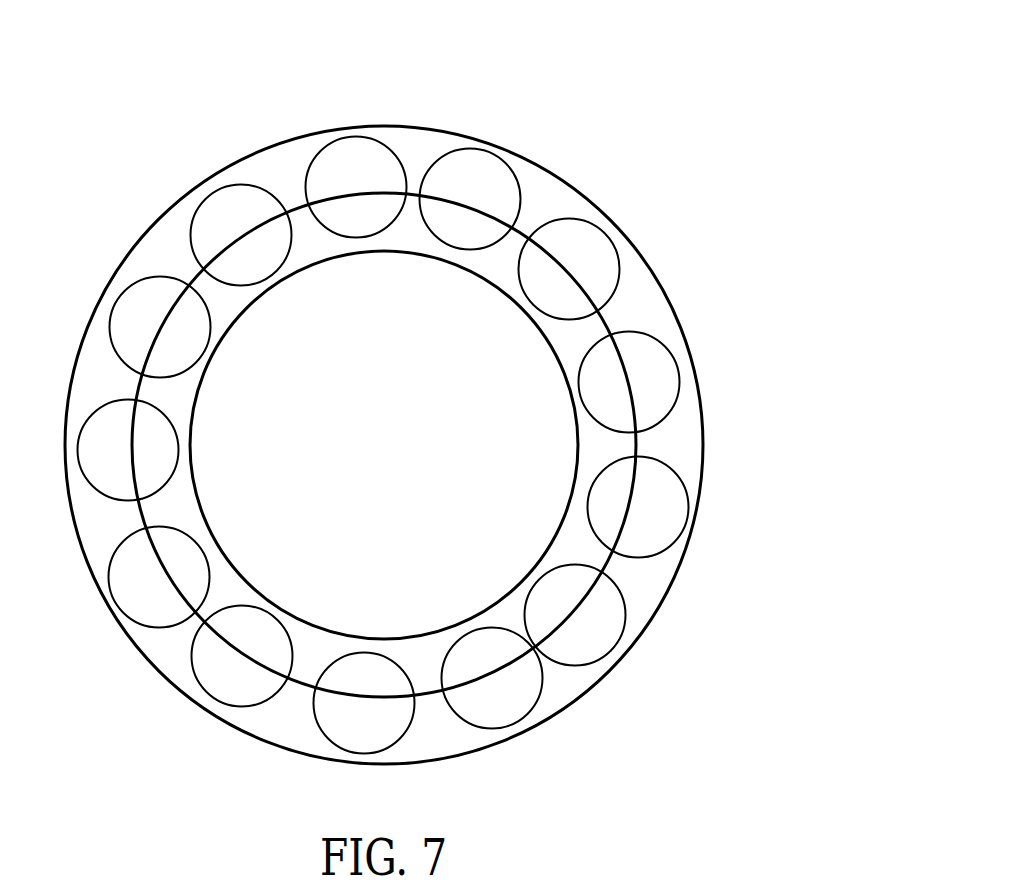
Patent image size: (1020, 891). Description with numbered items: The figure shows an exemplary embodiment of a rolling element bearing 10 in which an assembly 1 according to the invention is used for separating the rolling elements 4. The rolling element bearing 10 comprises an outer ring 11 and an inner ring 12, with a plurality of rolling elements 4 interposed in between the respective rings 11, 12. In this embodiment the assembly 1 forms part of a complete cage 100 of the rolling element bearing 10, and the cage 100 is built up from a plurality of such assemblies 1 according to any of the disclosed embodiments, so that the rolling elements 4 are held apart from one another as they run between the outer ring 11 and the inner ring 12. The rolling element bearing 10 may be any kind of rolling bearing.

The rolling element bearing 10 is at (673, 120).
The outer ring 11 is at (668, 590).
The inner ring 12 is at (552, 540).
The assembly 1 is at (473, 445).
The cage 100 is at (610, 326).
The rolling elements 4 is at (598, 632).